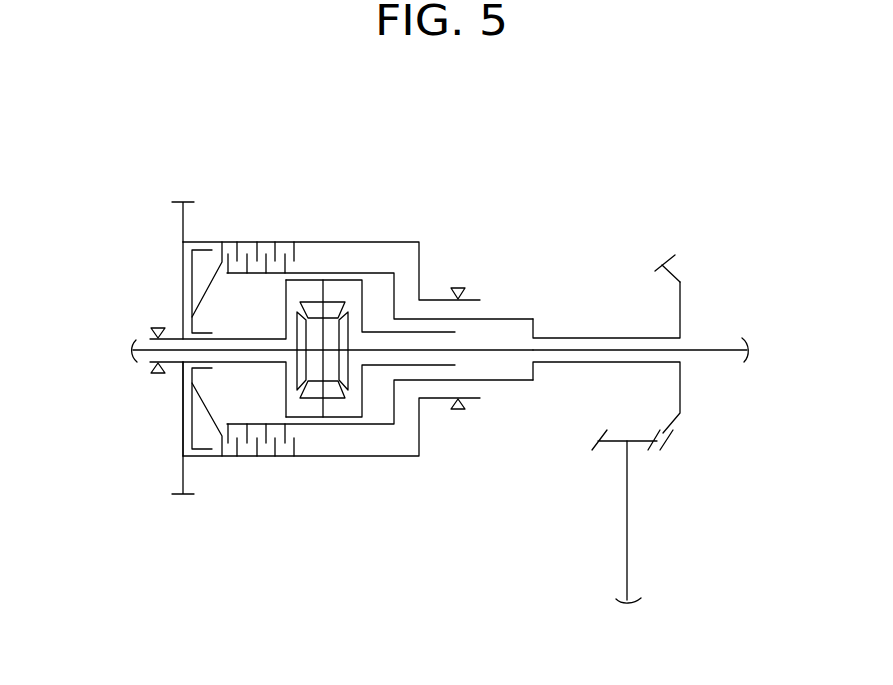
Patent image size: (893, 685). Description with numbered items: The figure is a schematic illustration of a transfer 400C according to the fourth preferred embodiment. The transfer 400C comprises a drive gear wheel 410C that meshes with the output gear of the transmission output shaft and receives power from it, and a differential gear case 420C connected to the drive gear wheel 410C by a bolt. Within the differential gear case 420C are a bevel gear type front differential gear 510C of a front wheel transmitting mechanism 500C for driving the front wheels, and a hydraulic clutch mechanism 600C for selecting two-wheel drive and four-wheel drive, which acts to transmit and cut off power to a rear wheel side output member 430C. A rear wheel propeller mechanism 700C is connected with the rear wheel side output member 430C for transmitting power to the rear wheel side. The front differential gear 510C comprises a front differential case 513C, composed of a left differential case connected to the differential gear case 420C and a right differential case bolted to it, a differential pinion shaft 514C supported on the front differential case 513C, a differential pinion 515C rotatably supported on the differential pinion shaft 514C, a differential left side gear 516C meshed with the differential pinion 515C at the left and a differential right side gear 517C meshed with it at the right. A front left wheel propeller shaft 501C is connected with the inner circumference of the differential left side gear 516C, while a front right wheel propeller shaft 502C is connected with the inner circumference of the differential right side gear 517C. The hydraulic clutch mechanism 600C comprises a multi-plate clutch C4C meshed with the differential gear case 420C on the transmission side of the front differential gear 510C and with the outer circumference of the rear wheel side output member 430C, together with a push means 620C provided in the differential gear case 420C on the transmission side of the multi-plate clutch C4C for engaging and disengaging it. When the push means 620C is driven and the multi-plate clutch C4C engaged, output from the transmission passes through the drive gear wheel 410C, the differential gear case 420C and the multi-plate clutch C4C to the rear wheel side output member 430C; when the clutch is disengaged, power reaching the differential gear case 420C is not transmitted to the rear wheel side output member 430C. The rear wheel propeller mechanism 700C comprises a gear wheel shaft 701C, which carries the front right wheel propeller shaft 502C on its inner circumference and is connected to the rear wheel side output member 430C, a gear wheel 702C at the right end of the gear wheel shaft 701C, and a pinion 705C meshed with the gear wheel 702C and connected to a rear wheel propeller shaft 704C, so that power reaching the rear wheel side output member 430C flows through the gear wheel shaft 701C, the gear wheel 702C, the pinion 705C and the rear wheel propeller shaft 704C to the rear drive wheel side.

The transfer 400C is at (147, 163).
The drive gear wheel 410C is at (183, 202).
The differential gear case 420C is at (396, 242).
The rear wheel side output member 430C is at (398, 285).
The hydraulic clutch mechanism 600C is at (178, 240).
The push means 620C is at (207, 232).
The multi-plate clutch C4C is at (276, 256).
The front wheel transmitting mechanism 500C is at (240, 387).
The front differential gear 510C is at (272, 405).
The front left wheel propeller shaft 501C is at (182, 373).
The front right wheel propeller shaft 502C is at (710, 350).
The front differential case 513C is at (328, 368).
The differential pinion shaft 514C is at (343, 365).
The differential pinion 515C is at (338, 362).
The differential left side gear 516C is at (303, 372).
The differential right side gear 517C is at (347, 365).
The rear wheel propeller mechanism 700C is at (692, 238).
The gear wheel shaft 701C is at (597, 338).
The gear wheel 702C is at (658, 265).
The rear wheel propeller shaft 704C is at (628, 520).
The pinion 705C is at (598, 441).